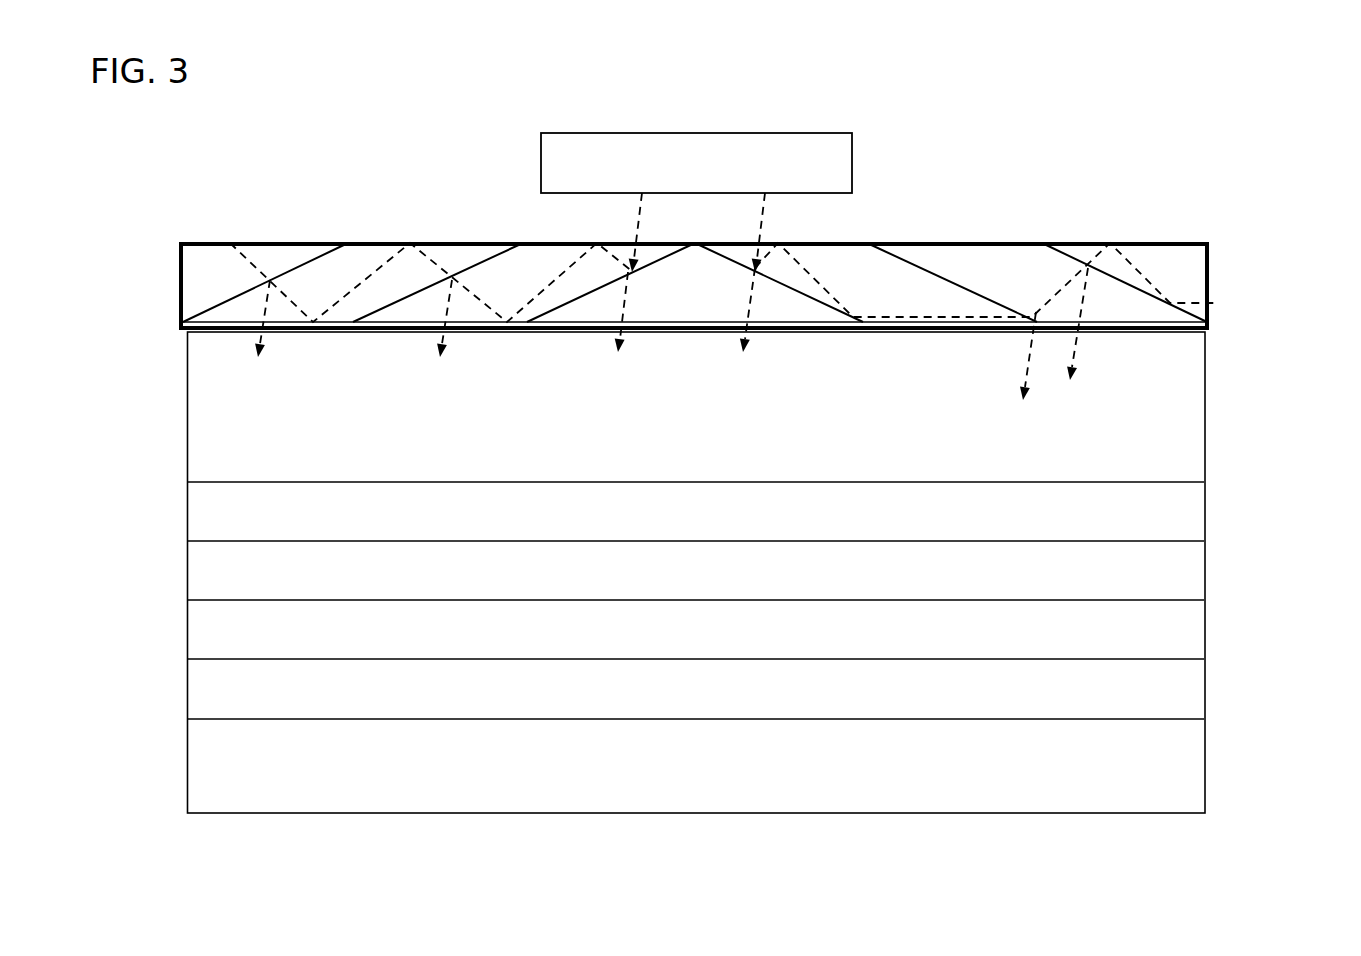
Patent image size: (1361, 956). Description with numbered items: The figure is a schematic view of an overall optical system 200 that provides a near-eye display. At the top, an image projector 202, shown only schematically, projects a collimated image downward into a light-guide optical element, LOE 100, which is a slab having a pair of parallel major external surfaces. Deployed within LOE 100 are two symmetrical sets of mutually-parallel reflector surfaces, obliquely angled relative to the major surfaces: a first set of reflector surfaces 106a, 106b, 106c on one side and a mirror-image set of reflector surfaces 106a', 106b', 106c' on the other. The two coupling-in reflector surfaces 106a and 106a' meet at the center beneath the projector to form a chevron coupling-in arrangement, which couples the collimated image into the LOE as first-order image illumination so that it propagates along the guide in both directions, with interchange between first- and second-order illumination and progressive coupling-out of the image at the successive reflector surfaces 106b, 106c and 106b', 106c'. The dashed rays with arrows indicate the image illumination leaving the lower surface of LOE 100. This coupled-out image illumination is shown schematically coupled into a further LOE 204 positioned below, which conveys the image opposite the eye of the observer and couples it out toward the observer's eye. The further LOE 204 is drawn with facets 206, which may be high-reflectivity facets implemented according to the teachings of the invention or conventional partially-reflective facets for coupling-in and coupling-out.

The optical system 200 is at (1190, 167).
The image projector 202 is at (852, 162).
The light-guide optical element (LOE) 100 is at (706, 325).
The further LOE 204 is at (758, 572).
The facets 206 is at (1180, 485).
The first facets / coupling-in reflector surface 106a is at (809, 325).
The reflector surface 106b is at (952, 325).
The reflector surface 106c is at (1124, 325).
The coupling-in reflector surface 106a' is at (580, 325).
The reflector surface 106b' is at (407, 324).
The reflector surface 106c' is at (215, 324).